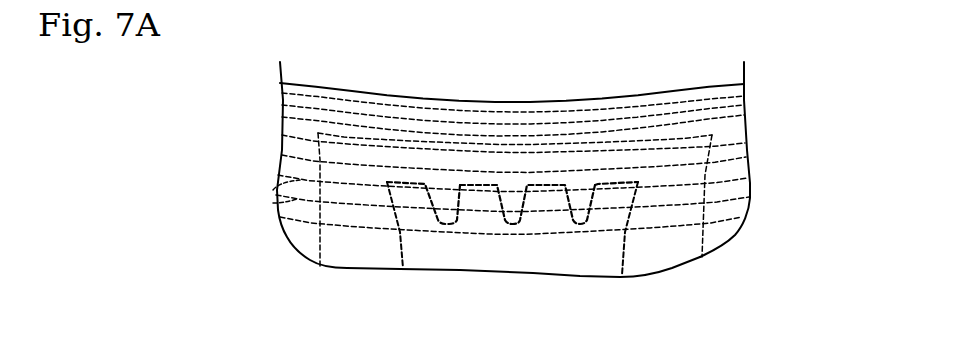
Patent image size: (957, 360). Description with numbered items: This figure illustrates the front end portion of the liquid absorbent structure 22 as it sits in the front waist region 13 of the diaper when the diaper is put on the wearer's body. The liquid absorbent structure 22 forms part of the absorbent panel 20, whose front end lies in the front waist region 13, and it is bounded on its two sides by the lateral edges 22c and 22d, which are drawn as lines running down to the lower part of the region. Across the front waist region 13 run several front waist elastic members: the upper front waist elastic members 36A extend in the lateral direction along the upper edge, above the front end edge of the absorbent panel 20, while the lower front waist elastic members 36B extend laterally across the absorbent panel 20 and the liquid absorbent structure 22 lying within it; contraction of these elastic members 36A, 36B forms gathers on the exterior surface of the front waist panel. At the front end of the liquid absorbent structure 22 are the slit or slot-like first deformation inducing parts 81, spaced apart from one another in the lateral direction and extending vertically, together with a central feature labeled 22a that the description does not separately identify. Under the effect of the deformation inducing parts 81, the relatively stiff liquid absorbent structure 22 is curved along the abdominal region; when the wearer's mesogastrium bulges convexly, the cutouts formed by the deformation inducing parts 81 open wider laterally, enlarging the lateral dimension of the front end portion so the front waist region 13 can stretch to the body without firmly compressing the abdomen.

The front waist region 13 is at (721, 131).
The absorbent panel 20 is at (688, 196).
The liquid absorbent structure 22 is at (528, 255).
The central notched portion 22a is at (546, 184).
The lateral edge 22c is at (403, 252).
The lateral edge 22d is at (631, 253).
The upper front waist elastic members 36A is at (403, 130).
The lower front waist elastic members 36B is at (274, 203).
The first deformation inducing parts 81 is at (591, 183).